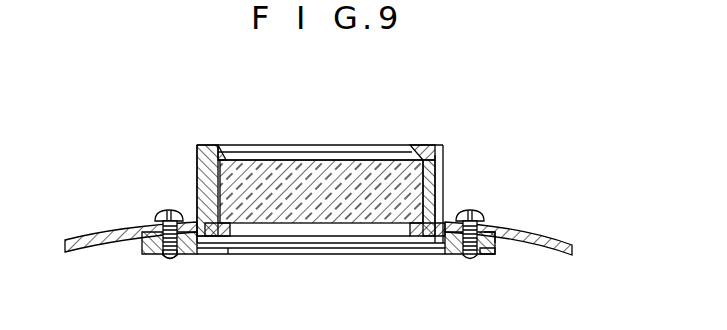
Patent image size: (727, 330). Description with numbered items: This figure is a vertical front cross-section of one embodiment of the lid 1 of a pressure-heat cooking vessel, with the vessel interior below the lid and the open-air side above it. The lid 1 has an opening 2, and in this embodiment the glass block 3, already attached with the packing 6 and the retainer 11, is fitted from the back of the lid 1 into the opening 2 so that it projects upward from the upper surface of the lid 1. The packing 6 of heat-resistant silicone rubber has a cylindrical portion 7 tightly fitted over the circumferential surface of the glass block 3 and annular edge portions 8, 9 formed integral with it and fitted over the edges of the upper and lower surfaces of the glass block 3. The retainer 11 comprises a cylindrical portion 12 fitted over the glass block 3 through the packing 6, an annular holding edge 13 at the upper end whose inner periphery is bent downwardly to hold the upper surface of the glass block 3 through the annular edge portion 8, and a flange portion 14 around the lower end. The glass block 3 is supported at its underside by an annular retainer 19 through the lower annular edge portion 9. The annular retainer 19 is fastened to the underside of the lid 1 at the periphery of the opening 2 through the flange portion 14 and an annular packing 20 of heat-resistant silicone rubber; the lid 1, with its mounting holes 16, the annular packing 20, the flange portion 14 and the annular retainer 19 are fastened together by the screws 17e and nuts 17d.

The lid 1 is at (573, 247).
The opening 2 is at (428, 238).
The glass block 3 is at (352, 172).
The packing 6 is at (198, 176).
The cylindrical portion 7 is at (197, 196).
The annular edge portion 8 is at (200, 151).
The annular edge portion 9 is at (228, 240).
The retainer 11 is at (446, 159).
The cylindrical portion 12 is at (441, 198).
The annular holding edge 13 is at (427, 150).
The flange portion 14 is at (448, 240).
The mounting holes 16 is at (158, 220).
The nuts 17d is at (166, 262).
The screws 17e is at (481, 216).
The annular retainer 19 is at (490, 256).
The annular packing 20 is at (503, 246).